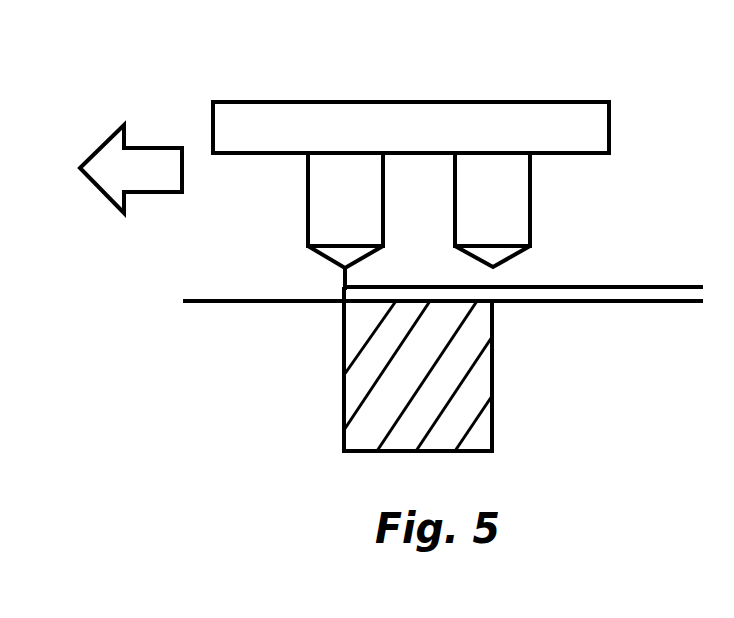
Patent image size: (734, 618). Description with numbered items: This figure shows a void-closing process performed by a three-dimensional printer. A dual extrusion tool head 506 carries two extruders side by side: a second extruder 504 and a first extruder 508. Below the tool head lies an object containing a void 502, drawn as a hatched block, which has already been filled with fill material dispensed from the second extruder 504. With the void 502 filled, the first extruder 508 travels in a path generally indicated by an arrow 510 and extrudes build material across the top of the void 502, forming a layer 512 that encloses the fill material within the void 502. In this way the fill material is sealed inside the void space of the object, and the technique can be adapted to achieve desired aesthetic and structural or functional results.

The void 502 is at (452, 360).
The second extruder 504 is at (530, 223).
The dual extrusion tool head 506 is at (454, 69).
The first extruder 508 is at (307, 198).
The arrow 510 is at (167, 142).
The layer 512 is at (583, 302).